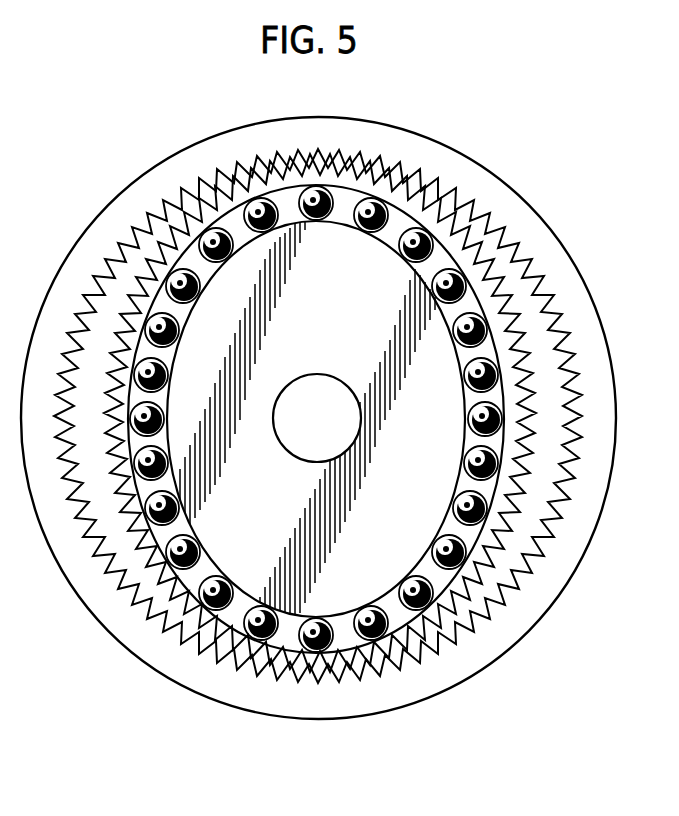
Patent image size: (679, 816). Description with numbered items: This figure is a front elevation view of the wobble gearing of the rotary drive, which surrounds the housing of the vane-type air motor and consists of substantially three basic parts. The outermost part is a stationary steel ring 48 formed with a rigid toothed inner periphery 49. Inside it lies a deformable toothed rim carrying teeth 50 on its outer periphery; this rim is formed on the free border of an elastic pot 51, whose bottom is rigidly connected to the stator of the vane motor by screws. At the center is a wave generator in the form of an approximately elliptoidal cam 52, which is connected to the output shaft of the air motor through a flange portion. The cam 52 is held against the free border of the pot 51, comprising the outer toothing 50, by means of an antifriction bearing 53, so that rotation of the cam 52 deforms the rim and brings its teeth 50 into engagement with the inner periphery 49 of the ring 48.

The stationary steel ring 48 is at (354, 693).
The rigid toothed inner periphery 49 is at (298, 683).
The teeth 50 is at (252, 653).
The elastic pot 51 is at (212, 617).
The elliptoidal cam 52 is at (218, 546).
The antifriction bearing 53 is at (392, 642).